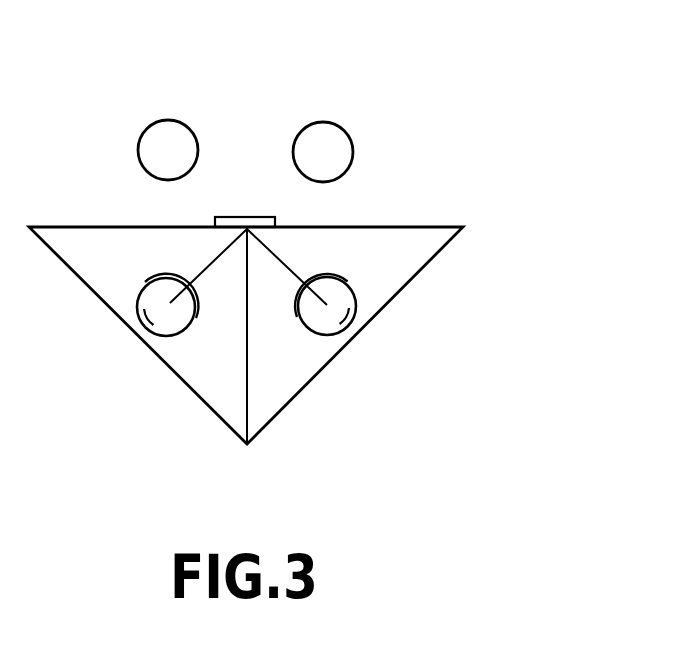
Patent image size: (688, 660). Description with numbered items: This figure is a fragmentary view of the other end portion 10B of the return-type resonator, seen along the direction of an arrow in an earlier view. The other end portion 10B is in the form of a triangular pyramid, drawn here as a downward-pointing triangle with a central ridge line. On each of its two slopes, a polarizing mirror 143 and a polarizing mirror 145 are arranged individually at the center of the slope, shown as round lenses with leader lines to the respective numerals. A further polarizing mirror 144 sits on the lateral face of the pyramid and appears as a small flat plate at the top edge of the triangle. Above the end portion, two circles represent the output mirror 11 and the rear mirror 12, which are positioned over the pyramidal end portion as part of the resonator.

The other end portion of the return-type resonator 10B is at (407, 288).
The output mirror 11 is at (180, 121).
The rear mirror 12 is at (337, 121).
The polarizing mirror 143 is at (330, 337).
The polarizing mirror 144 is at (267, 217).
The polarizing mirror 145 is at (145, 322).